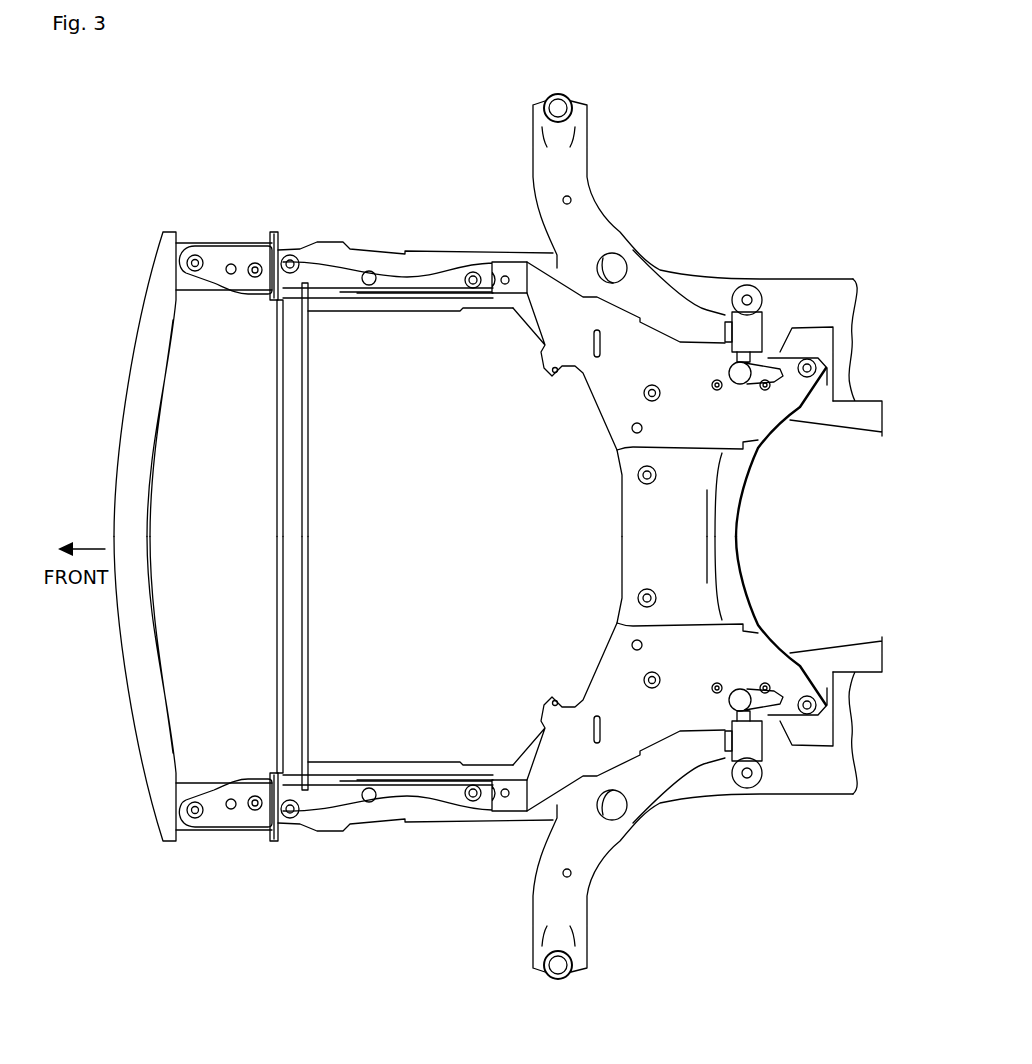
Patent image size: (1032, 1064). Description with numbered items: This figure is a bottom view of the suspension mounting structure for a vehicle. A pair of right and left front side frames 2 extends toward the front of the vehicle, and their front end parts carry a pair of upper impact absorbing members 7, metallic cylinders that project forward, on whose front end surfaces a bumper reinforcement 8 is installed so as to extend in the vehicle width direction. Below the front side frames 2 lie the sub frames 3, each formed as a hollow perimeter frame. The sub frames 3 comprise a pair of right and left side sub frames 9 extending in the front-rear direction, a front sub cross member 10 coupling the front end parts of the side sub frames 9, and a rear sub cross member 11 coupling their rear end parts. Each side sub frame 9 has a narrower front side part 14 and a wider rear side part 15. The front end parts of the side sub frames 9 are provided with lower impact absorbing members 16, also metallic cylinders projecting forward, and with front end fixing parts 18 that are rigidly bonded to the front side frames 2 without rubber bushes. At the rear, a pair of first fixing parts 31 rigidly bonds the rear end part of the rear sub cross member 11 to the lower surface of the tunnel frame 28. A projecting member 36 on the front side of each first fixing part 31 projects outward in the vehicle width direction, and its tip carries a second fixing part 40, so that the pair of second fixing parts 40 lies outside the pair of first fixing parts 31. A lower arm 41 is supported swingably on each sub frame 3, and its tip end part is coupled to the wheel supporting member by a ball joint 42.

The front side frame 2 is at (398, 246).
The sub frame 3 is at (608, 524).
The upper impact absorbing member 7 is at (230, 243).
The bumper reinforcement 8 is at (116, 468).
The side sub frame 9 is at (455, 262).
The front sub cross member 10 is at (310, 526).
The rear sub cross member 11 is at (725, 540).
The front side part 14 is at (403, 286).
The rear side part 15 is at (617, 395).
The lower impact absorbing member 16 is at (240, 282).
The front end fixing part 18 is at (280, 245).
The tunnel frame 28 is at (848, 422).
The first fixing part 31 is at (806, 378).
The projecting member 36 is at (753, 322).
The second fixing part 40 is at (742, 285).
The lower arm 41 is at (578, 190).
The ball joint 42 is at (557, 96).